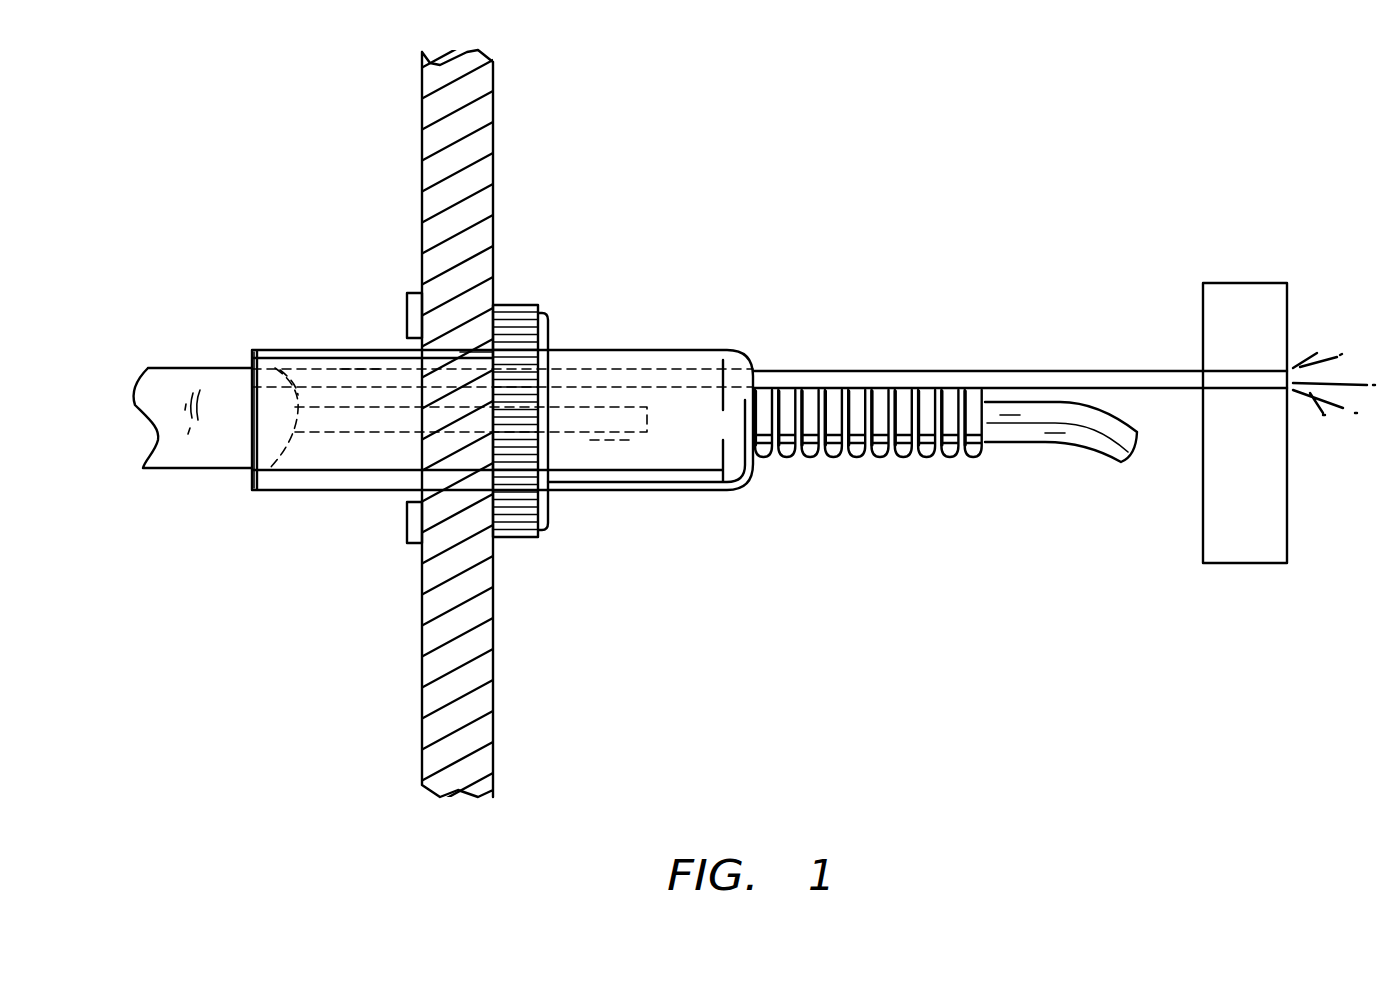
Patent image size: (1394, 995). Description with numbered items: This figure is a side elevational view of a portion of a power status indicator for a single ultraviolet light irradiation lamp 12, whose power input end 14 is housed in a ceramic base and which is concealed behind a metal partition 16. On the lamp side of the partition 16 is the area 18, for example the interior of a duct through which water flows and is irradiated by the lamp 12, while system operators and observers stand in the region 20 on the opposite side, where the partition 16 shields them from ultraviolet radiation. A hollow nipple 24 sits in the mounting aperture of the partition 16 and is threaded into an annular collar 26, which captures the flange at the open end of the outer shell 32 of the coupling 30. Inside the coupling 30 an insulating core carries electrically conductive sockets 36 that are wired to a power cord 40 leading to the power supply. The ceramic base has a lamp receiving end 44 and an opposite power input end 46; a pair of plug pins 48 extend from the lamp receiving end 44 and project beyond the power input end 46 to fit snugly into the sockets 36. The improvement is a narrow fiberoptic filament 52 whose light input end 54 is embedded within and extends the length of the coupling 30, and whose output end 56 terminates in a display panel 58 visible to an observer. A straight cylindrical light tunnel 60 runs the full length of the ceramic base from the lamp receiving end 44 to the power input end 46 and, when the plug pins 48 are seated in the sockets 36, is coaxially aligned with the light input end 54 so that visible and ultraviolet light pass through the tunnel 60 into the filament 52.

The ultraviolet light irradiation lamp 12 is at (169, 337).
The power input end 14 is at (262, 414).
The metal partition 16 is at (493, 117).
The area 18 is at (275, 737).
The region 20 is at (727, 767).
The hollow nipple 24 is at (407, 523).
The annular collar 26 is at (525, 303).
The coupling 30 is at (780, 340).
The outer shell 32 is at (695, 497).
The electrically conductive sockets 36 is at (600, 420).
The power cord 40 is at (1050, 447).
The lamp receiving end 44 is at (258, 350).
The power input end 46 is at (483, 352).
The plug pins 48 is at (365, 345).
The fiberoptic filament 52 is at (957, 367).
The light input end 54 is at (592, 348).
The output end 56 is at (1253, 367).
The display panel 58 is at (1290, 495).
The light tunnel 60 is at (300, 360).